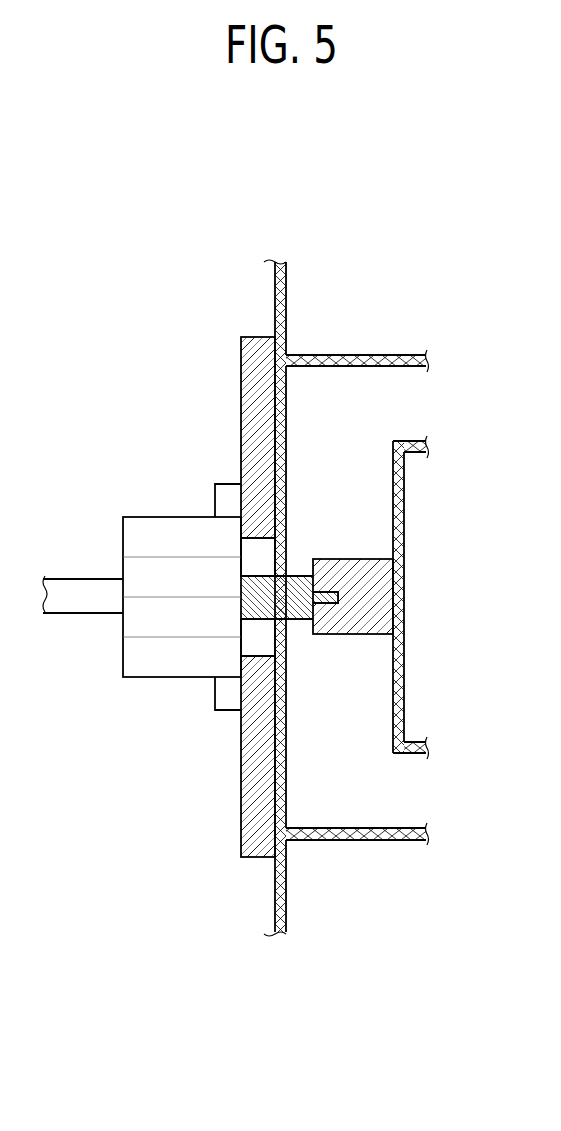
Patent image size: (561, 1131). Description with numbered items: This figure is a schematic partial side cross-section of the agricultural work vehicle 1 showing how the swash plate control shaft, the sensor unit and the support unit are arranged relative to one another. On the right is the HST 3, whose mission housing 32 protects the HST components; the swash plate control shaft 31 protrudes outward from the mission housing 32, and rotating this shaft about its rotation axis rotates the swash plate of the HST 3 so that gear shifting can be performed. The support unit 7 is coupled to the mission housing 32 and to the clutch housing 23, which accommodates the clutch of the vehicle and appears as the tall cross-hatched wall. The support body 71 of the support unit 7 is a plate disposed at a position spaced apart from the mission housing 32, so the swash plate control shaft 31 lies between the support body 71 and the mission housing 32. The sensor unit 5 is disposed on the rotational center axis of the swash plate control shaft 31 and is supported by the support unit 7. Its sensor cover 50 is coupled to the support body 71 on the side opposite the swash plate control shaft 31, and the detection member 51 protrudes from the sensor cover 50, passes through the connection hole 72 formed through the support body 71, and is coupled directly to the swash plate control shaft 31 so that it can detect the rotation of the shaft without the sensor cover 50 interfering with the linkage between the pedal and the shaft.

The agricultural work vehicle 1 is at (47, 255).
The clutch housing 23 is at (275, 299).
The support unit 7 is at (155, 402).
The support body 71 is at (259, 399).
The connection hole 72 is at (262, 552).
The sensor unit 5 is at (193, 746).
The sensor cover 50 is at (135, 677).
The detection member 51 is at (258, 610).
The HST 3 is at (480, 480).
The mission housing 32 is at (395, 481).
The swash plate control shaft 31 is at (372, 598).